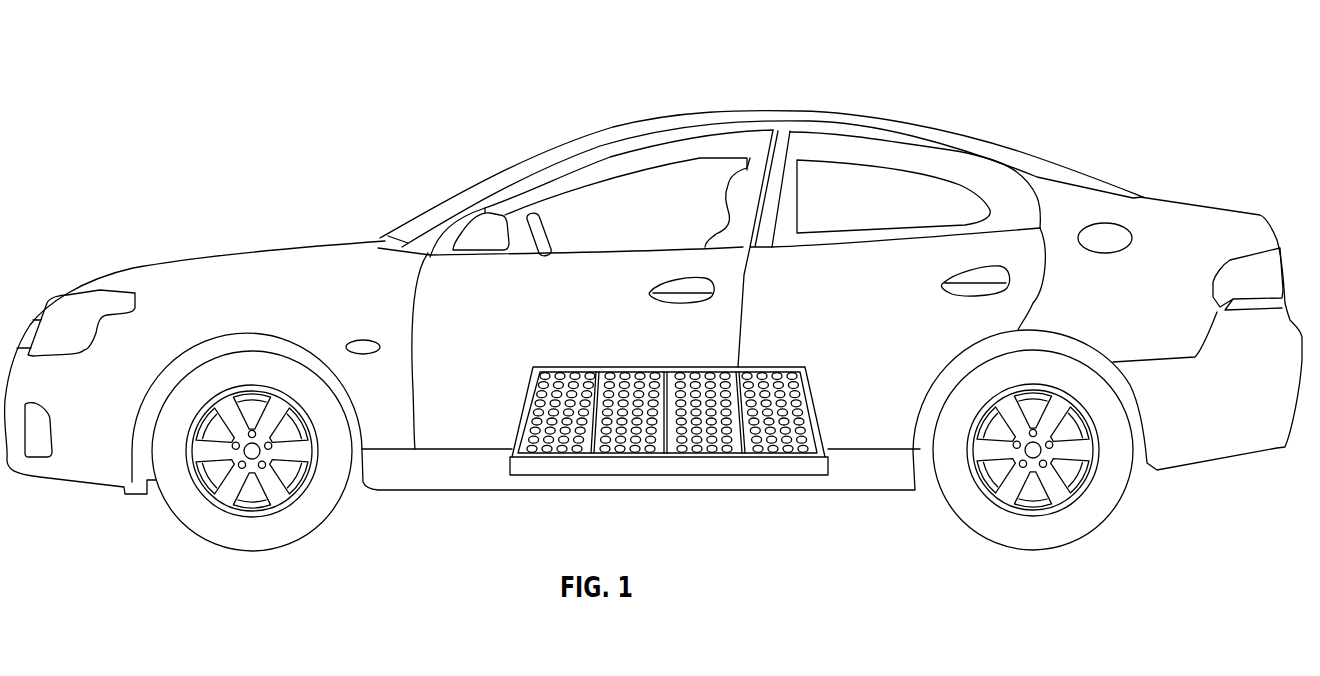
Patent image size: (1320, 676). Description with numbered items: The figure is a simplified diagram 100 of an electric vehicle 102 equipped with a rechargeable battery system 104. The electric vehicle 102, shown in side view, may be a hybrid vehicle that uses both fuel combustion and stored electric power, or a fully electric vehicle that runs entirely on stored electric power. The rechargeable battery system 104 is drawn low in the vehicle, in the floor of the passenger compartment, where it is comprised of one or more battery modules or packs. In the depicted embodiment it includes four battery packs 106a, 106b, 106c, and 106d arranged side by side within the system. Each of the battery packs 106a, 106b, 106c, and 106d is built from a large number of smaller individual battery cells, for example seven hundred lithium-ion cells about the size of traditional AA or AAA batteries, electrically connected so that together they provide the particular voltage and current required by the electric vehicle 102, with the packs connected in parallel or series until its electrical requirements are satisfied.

The simplified diagram 100 is at (355, 90).
The electric vehicle 102 is at (752, 112).
The rechargeable battery system 104 is at (687, 475).
The battery pack 106a is at (546, 376).
The battery pack 106b is at (627, 372).
The battery pack 106c is at (707, 372).
The battery pack 106d is at (792, 372).